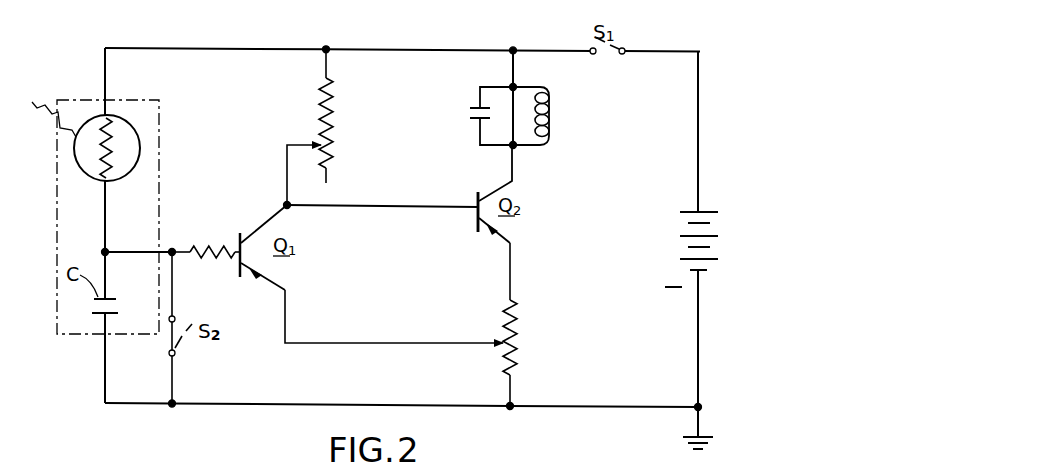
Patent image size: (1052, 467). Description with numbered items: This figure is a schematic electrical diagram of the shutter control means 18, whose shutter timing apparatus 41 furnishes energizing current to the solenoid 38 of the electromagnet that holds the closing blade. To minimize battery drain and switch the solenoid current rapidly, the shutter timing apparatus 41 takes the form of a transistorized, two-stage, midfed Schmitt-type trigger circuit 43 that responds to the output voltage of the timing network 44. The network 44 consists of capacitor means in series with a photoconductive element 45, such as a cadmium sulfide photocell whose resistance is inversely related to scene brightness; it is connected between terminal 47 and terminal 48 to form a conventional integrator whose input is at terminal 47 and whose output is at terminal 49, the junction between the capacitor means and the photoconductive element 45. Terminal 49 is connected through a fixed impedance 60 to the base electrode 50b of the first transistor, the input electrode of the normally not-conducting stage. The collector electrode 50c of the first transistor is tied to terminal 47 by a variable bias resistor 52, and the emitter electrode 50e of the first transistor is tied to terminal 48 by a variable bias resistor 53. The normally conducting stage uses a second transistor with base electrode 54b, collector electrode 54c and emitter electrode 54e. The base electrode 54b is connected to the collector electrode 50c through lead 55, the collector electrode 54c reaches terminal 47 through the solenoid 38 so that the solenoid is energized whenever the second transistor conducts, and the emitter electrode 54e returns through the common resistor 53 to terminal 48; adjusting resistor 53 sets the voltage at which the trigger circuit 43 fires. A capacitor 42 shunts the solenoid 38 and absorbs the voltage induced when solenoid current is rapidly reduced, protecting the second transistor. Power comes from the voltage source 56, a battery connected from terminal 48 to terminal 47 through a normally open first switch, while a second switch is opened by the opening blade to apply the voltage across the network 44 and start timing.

The shutter control means 18 is at (727, 158).
The solenoid 38 is at (550, 125).
The shutter timing apparatus 41 is at (217, 66).
The capacitor 42 is at (473, 100).
The trigger circuit 43 is at (530, 262).
The network 44 is at (52, 320).
The photoconductive element 45 is at (118, 152).
The terminal 47 is at (514, 50).
The terminal 48 is at (702, 407).
The output terminal 49 is at (108, 251).
The base electrode 50b is at (238, 245).
The collector electrode 50c is at (262, 223).
The emitter electrode 50e is at (268, 284).
The variable bias resistor 52 is at (331, 126).
The variable bias resistor 53 is at (518, 343).
The base electrode 54b is at (453, 206).
The collector electrode 54c is at (512, 181).
The emitter electrode 54e is at (503, 245).
The lead 55 is at (375, 208).
The voltage source 56 is at (718, 243).
The fixed impedance 60 is at (192, 250).